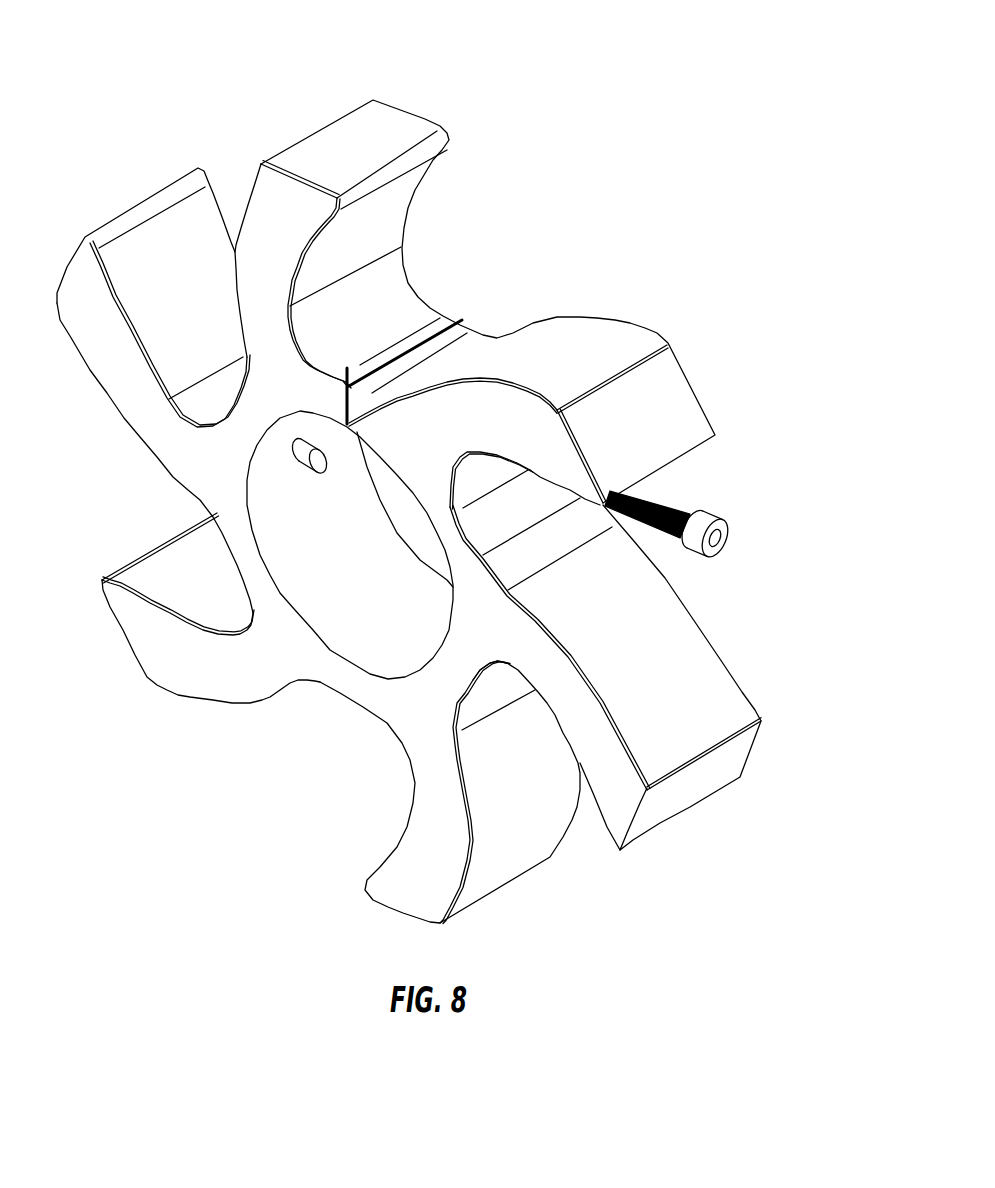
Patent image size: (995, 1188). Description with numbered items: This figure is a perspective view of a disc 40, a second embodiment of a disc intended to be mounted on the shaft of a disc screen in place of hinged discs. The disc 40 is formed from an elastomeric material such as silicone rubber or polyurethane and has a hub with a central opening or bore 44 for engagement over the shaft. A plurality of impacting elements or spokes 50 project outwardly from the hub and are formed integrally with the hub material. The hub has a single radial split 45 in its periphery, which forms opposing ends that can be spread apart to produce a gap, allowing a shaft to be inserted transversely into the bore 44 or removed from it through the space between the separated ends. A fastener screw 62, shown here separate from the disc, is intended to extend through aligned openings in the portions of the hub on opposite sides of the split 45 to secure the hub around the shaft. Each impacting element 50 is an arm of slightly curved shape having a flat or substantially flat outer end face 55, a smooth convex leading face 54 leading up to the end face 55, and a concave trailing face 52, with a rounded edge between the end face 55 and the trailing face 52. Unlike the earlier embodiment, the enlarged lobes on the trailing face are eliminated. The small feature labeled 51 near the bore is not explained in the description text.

The disc 40 is at (740, 95).
The bore 44 is at (420, 528).
The radial split 45 is at (437, 331).
The impacting elements 50 is at (404, 183).
The pin 51 is at (291, 452).
The trailing face 52 is at (308, 287).
The leading face 54 is at (619, 342).
The outer end face 55 is at (377, 140).
The fastener screw 62 is at (683, 500).